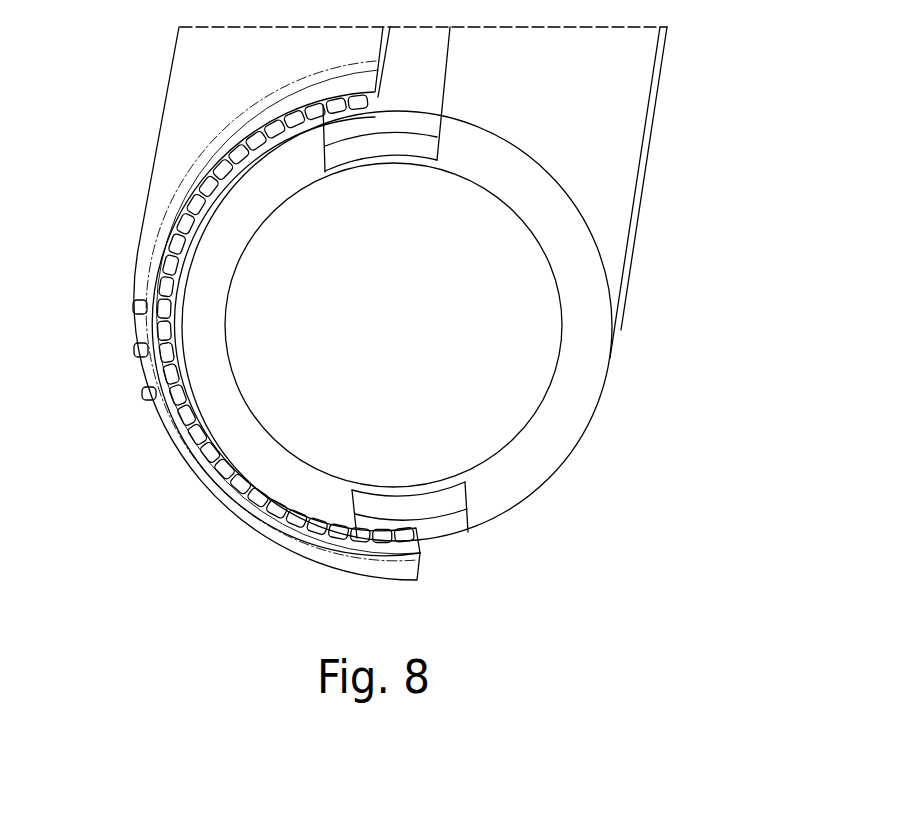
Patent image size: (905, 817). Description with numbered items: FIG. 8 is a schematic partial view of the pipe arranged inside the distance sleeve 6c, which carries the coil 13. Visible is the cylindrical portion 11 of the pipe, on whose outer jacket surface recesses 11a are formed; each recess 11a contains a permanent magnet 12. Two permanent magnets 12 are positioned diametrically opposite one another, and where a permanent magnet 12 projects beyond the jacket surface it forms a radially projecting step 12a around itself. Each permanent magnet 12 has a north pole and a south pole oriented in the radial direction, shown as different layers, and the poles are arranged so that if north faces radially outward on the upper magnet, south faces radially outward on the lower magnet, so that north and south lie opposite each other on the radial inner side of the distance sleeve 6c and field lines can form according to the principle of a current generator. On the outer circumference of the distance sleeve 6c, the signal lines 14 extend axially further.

The distance sleeve 6c is at (180, 103).
The cylindrical portion 11 is at (583, 397).
The recess 11a is at (443, 146).
The permanent magnet 12 is at (440, 523).
The radially projecting step 12a is at (473, 533).
The coil 13 is at (245, 480).
The signal lines 14 is at (133, 305).